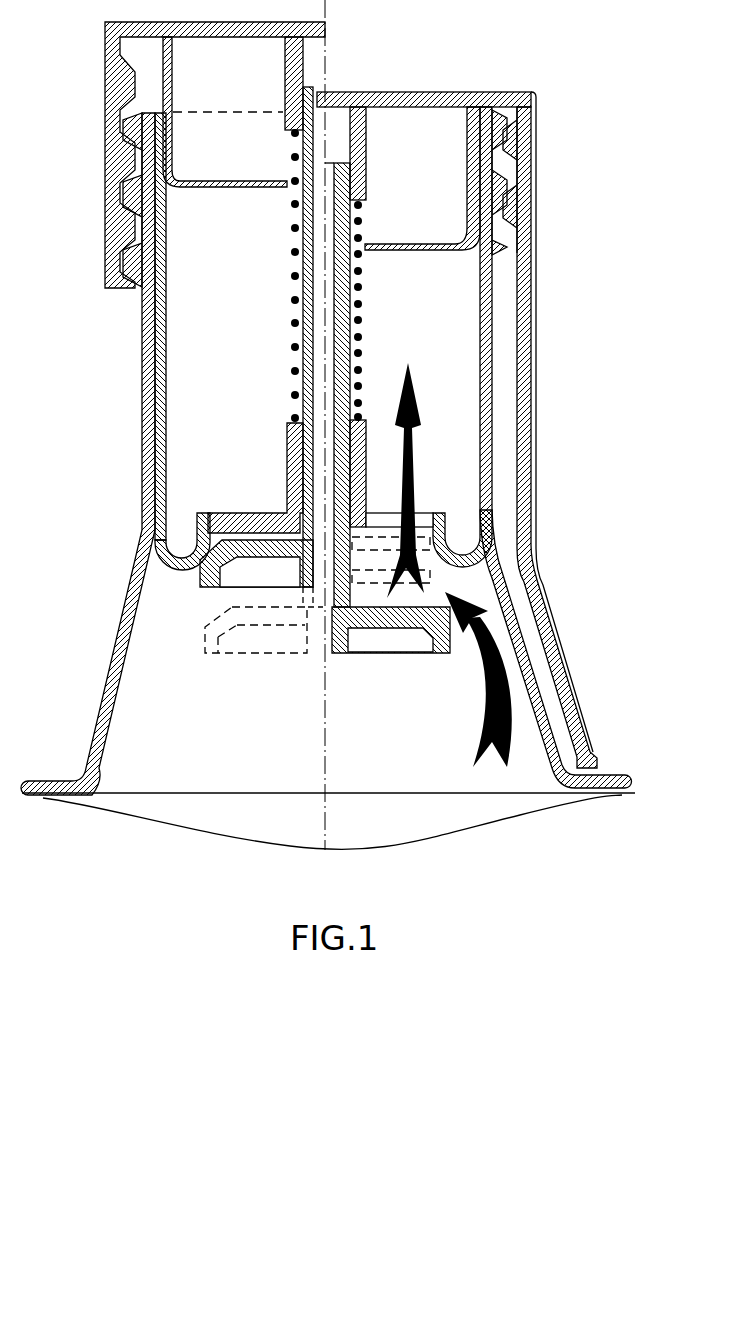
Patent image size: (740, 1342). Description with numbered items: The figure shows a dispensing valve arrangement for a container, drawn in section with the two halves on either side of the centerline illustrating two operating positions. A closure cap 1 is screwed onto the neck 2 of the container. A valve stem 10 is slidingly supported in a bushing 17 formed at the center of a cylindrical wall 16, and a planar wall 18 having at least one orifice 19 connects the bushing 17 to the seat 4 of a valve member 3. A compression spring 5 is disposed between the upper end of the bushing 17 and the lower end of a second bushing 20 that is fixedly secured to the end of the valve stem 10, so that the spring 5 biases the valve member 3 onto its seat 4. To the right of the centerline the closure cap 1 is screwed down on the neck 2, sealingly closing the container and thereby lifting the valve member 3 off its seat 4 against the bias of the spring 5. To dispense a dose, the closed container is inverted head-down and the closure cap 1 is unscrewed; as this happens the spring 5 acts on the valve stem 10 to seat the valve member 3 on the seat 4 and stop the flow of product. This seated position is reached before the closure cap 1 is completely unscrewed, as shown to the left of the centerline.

The closure cap 1 is at (525, 373).
The neck 2 is at (147, 327).
The valve member 3 is at (207, 583).
The seat 4 is at (207, 555).
The compression spring 5 is at (357, 294).
The valve stem 10 is at (293, 317).
The cylindrical wall 16 is at (152, 383).
The bushing 17 is at (358, 487).
The planar wall 18 is at (253, 513).
The orifice 19 is at (417, 513).
The bushing 20 is at (367, 143).